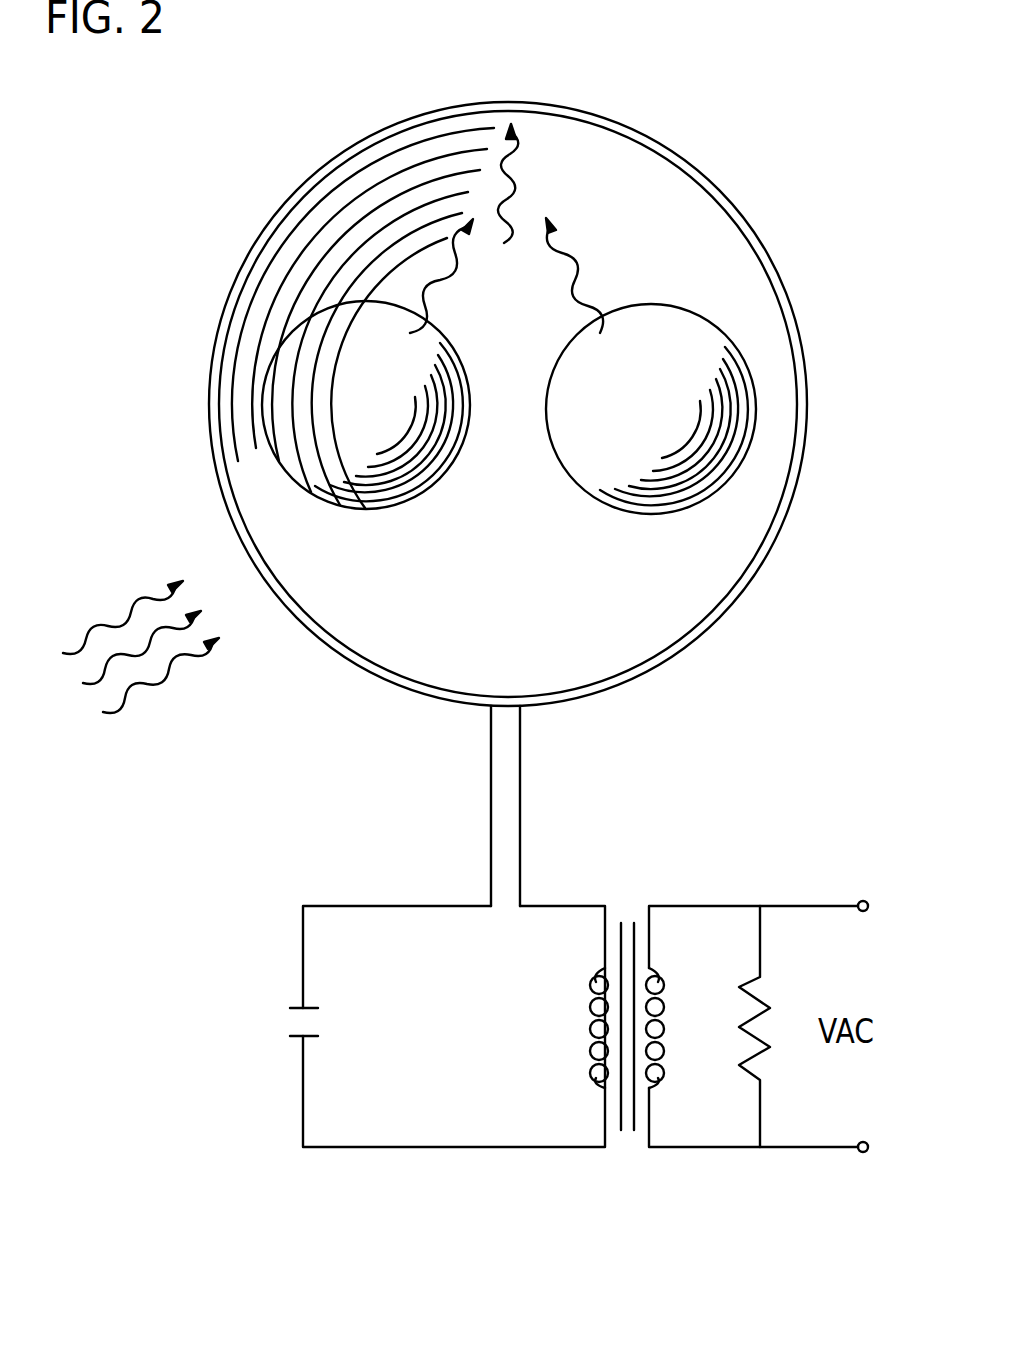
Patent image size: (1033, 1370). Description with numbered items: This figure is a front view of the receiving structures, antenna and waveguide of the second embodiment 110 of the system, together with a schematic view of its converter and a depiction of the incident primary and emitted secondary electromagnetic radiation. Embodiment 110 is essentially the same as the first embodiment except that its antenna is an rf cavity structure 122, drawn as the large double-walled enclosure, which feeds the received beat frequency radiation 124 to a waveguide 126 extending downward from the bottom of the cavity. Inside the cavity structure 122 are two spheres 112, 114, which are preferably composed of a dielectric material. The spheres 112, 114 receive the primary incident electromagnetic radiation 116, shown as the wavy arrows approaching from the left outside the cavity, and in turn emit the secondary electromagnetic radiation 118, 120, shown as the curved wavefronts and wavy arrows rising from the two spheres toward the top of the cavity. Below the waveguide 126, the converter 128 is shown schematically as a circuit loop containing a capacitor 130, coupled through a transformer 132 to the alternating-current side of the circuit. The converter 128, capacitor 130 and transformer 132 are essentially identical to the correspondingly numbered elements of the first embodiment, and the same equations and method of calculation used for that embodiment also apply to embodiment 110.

The second embodiment 110 is at (238, 192).
The sphere 112 is at (278, 345).
The sphere 114 is at (730, 332).
The primary incident electromagnetic radiation 116 is at (147, 588).
The secondary electromagnetic radiation 118 is at (437, 255).
The secondary electromagnetic radiation 120 is at (578, 253).
The rf cavity structure 122 is at (698, 640).
The beat frequency radiation 124 is at (518, 167).
The waveguide 126 is at (521, 830).
The converter 128 is at (472, 1155).
The capacitor 130 is at (293, 1044).
The transformer 132 is at (632, 1153).